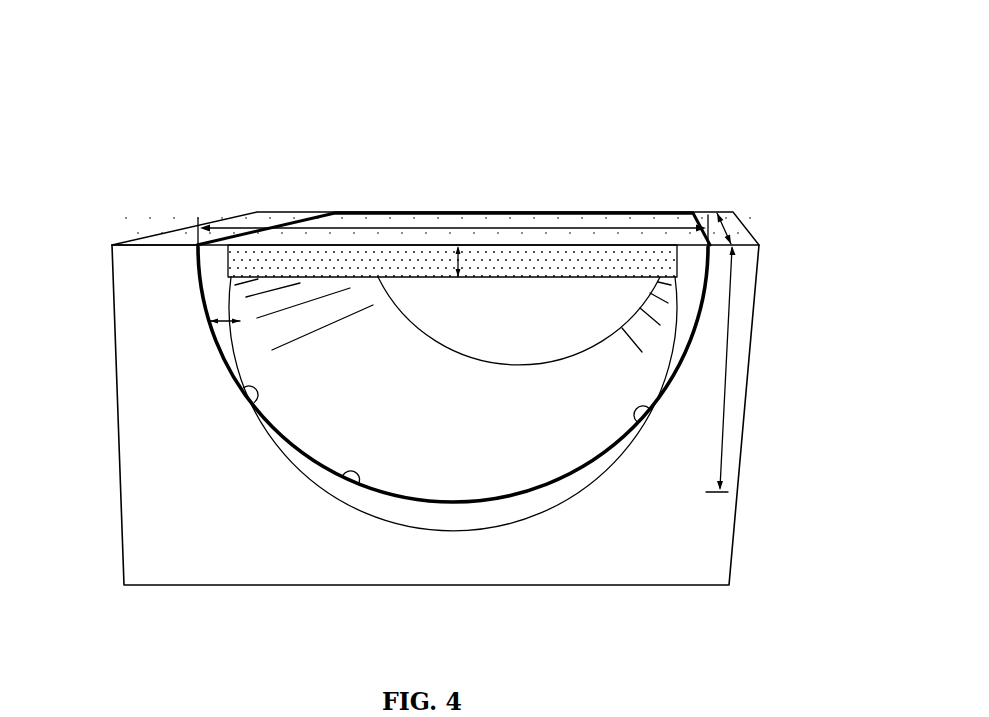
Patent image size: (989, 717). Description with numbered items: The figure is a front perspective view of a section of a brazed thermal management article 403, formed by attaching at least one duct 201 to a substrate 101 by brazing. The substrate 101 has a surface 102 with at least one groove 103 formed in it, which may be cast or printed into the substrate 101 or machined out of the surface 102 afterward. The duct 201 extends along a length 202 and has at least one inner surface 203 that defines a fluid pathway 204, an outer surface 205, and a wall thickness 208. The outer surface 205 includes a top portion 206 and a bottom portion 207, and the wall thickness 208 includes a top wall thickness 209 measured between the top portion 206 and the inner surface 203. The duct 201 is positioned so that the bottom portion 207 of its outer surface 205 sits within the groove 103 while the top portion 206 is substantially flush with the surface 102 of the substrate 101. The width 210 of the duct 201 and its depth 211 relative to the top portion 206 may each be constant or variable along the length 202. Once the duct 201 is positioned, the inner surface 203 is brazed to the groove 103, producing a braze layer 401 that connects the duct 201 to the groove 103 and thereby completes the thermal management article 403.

The substrate 101 is at (757, 267).
The surface 102 is at (180, 237).
The groove 103 is at (582, 468).
The duct 201 is at (551, 144).
The length 202 is at (724, 228).
The inner surface 203 is at (333, 358).
The fluid pathway 204 is at (505, 302).
The outer surface 205 is at (433, 222).
The top portion 206 is at (380, 213).
The bottom portion 207 is at (242, 387).
The wall thickness 208 is at (214, 318).
The top wall thickness 209 is at (462, 262).
The width 210 is at (575, 227).
The depth 211 is at (728, 367).
The braze layer 401 is at (281, 223).
The thermal management article 403 is at (195, 164).